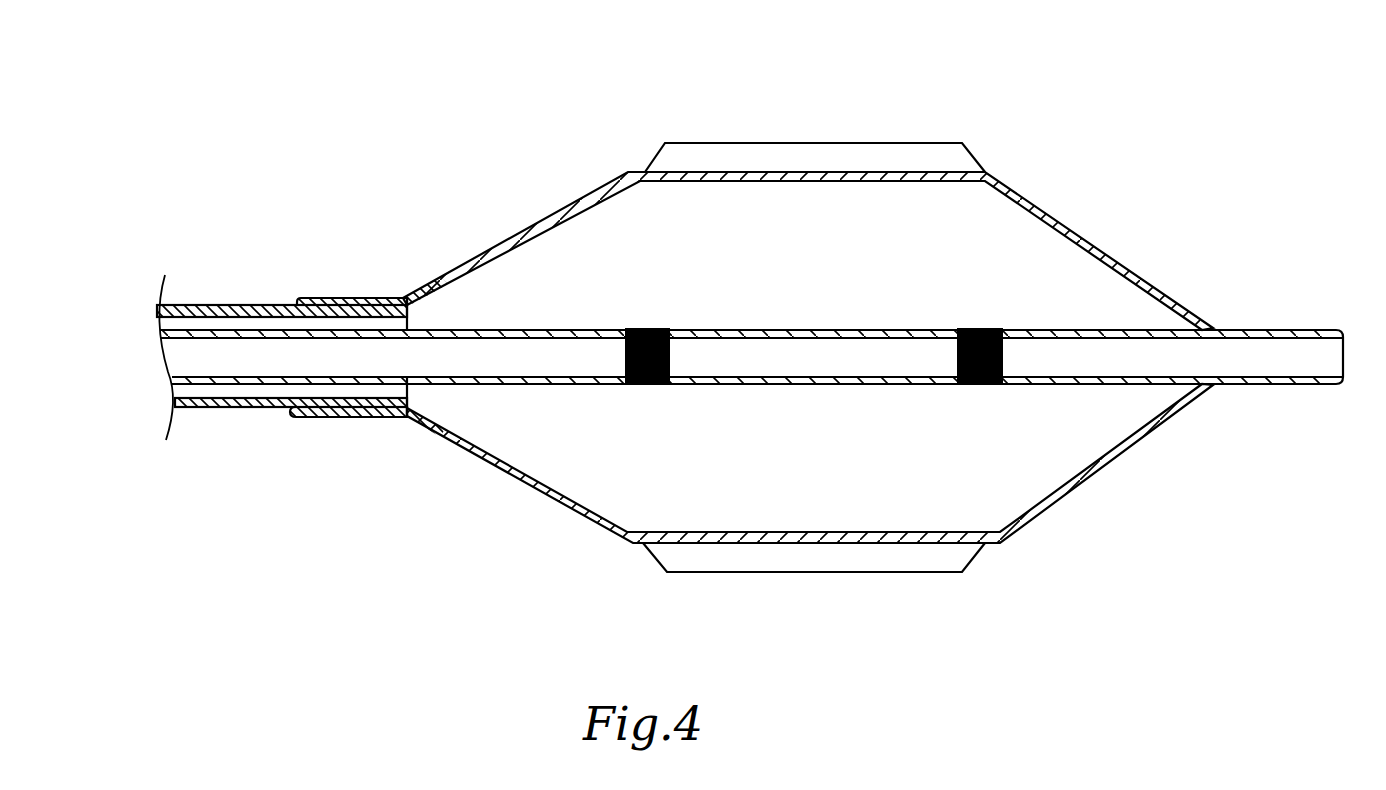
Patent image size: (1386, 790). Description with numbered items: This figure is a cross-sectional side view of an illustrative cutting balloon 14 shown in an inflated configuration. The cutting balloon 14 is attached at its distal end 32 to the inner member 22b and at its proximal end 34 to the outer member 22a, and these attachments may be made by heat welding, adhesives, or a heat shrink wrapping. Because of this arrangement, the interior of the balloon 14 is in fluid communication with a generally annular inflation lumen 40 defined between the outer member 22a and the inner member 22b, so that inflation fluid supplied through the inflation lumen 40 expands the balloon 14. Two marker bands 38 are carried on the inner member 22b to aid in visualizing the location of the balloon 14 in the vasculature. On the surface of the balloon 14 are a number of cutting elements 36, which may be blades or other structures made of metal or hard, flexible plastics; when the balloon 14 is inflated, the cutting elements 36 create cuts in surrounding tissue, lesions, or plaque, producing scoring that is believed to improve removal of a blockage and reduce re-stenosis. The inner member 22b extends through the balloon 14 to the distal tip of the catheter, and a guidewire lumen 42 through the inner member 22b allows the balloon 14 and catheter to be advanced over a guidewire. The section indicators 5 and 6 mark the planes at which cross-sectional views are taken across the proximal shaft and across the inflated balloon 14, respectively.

The cutting balloon 14 is at (1060, 212).
The outer member 22a is at (392, 305).
The inner member 22b is at (316, 388).
The distal end 32 is at (188, 306).
The proximal end 34 is at (358, 299).
The cutting elements 36 is at (940, 150).
The marker bands 38 is at (637, 386).
The inflation lumen 40 is at (353, 390).
The guidewire lumen 42 is at (1302, 357).
The section line 5 is at (262, 463).
The section line 6 is at (870, 648).